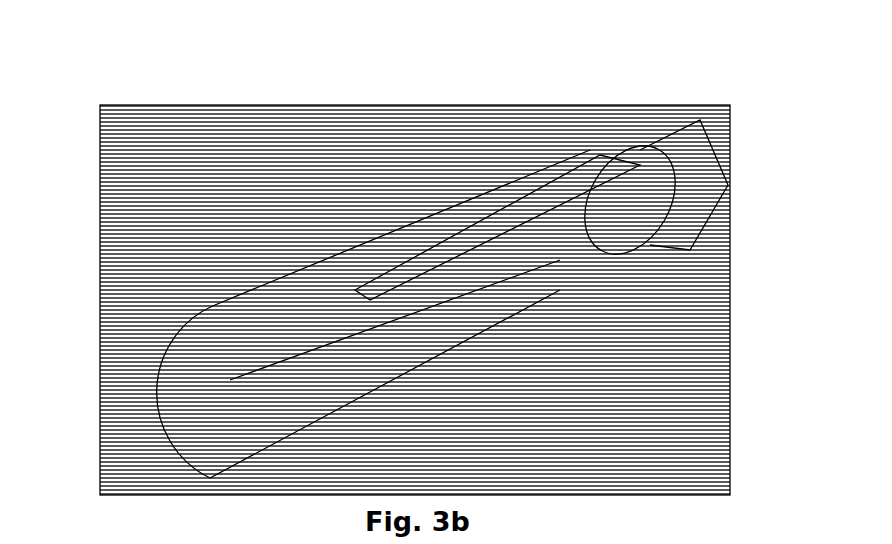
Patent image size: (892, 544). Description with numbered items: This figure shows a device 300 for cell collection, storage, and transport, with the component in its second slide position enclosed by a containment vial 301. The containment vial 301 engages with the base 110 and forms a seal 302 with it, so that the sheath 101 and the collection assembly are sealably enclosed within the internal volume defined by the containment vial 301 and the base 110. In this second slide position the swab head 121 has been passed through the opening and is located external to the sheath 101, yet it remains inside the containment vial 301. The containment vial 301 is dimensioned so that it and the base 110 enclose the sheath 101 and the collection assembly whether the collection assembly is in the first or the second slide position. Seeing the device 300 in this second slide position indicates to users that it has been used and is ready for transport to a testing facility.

The device 300 is at (382, 300).
The containment vial 301 is at (215, 305).
The sheath 101 is at (355, 270).
The seal 302 is at (610, 150).
The base 110 is at (705, 215).
The swab head 121 is at (260, 385).